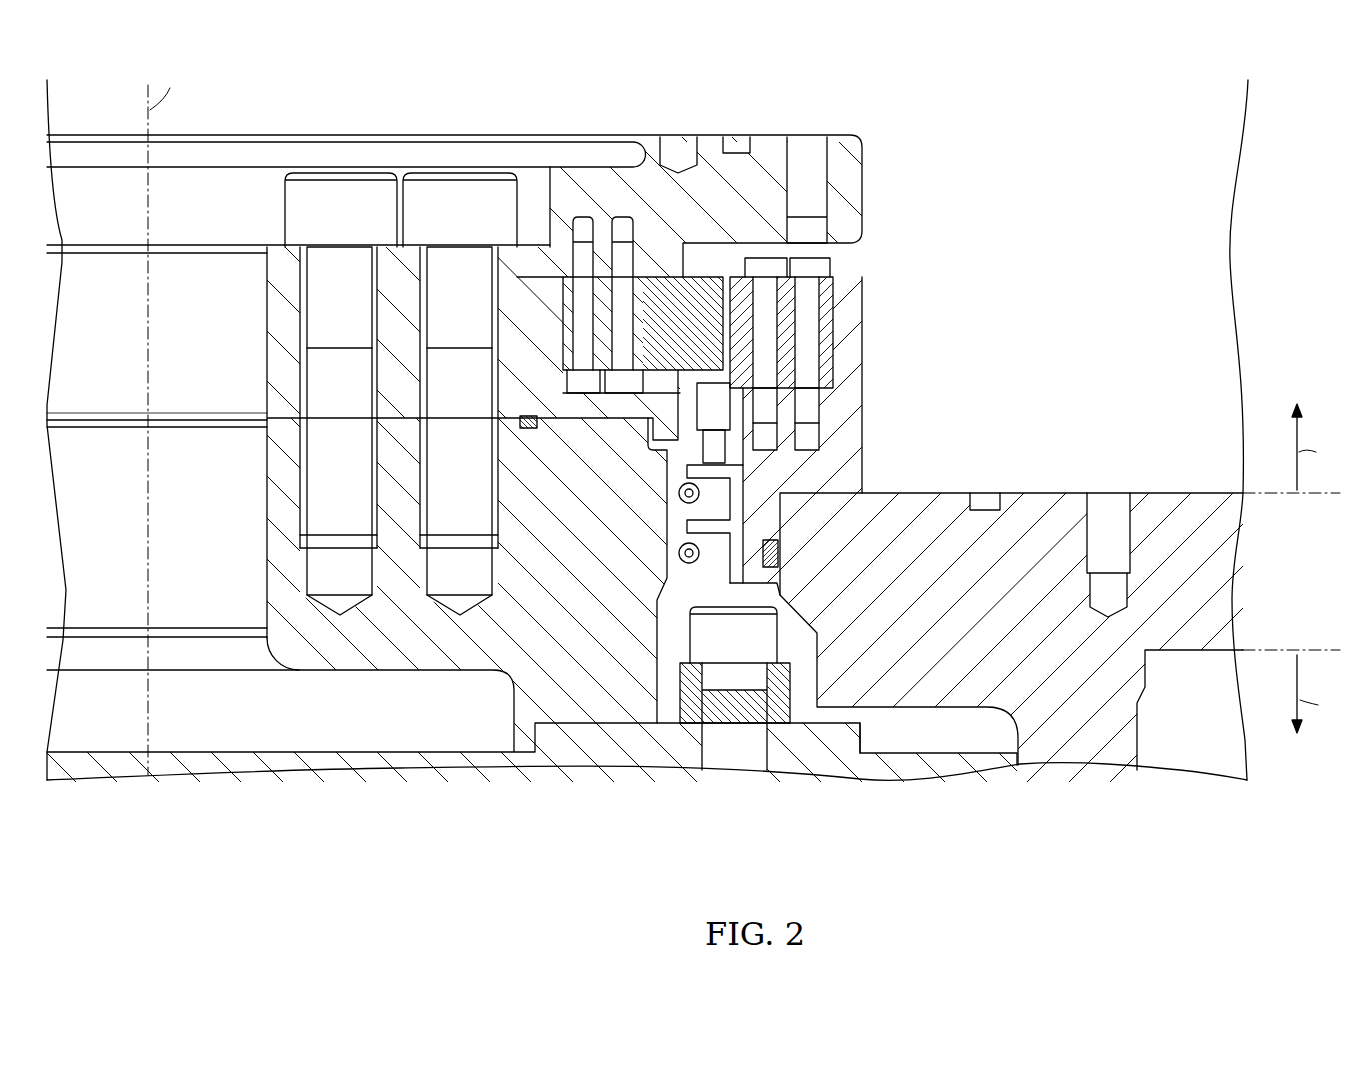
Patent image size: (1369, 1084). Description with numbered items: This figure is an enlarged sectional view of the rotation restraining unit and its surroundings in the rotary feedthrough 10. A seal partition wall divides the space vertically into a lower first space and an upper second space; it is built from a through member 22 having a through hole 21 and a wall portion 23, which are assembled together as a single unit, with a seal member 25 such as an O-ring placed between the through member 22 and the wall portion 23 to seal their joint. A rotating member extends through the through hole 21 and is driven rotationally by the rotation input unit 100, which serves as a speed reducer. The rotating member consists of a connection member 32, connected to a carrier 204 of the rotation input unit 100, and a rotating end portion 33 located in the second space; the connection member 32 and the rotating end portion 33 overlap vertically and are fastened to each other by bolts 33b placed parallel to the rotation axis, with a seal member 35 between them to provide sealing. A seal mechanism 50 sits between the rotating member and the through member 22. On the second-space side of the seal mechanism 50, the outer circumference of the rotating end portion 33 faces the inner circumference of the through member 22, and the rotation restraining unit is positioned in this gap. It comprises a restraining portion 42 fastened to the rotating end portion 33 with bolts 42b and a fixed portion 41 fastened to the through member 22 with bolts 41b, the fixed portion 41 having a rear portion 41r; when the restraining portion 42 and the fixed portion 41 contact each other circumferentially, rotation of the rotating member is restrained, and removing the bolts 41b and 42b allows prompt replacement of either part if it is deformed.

The rotary feedthrough 10 is at (1280, 115).
The through hole 21 is at (703, 615).
The through member 22 is at (986, 563).
The wall portion 23 is at (1158, 482).
The seal member 25 is at (768, 568).
The connection member 32 is at (500, 705).
The rotating end portion 33 is at (852, 125).
The bolts 33b is at (352, 190).
The seal member 35 is at (530, 430).
The fixed portion 41 is at (854, 346).
The bolts 41b is at (760, 273).
The connector rear portion 41r is at (730, 313).
The restraining portion 42 is at (676, 240).
The bolts 42b is at (622, 216).
The seal mechanism 50 is at (676, 580).
The rotation input unit 100 is at (701, 476).
The carrier 204 is at (980, 742).